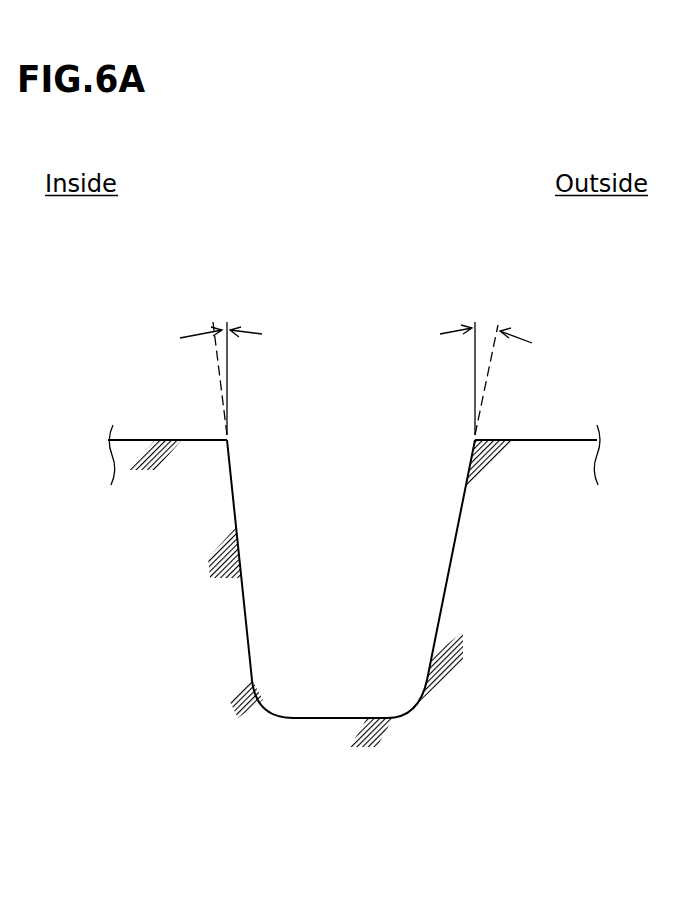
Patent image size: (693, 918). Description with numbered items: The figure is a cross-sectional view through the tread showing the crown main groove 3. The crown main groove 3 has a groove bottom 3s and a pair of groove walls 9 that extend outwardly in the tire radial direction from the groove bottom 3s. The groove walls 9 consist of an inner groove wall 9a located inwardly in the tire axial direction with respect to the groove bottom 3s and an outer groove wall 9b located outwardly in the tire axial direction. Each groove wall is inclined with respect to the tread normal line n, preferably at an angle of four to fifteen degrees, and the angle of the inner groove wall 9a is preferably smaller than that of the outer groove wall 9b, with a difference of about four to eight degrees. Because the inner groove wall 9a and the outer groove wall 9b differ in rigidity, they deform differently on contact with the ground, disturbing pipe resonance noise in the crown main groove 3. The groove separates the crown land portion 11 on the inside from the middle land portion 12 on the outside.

The crown main groove 3 is at (341, 598).
The groove bottom 3s is at (320, 718).
The groove walls 9 is at (341, 533).
The inner groove wall 9a is at (242, 578).
The outer groove wall 9b is at (448, 578).
The crown land portion 11 is at (198, 437).
The middle land portion 12 is at (555, 438).
The tread normal line n is at (228, 375).